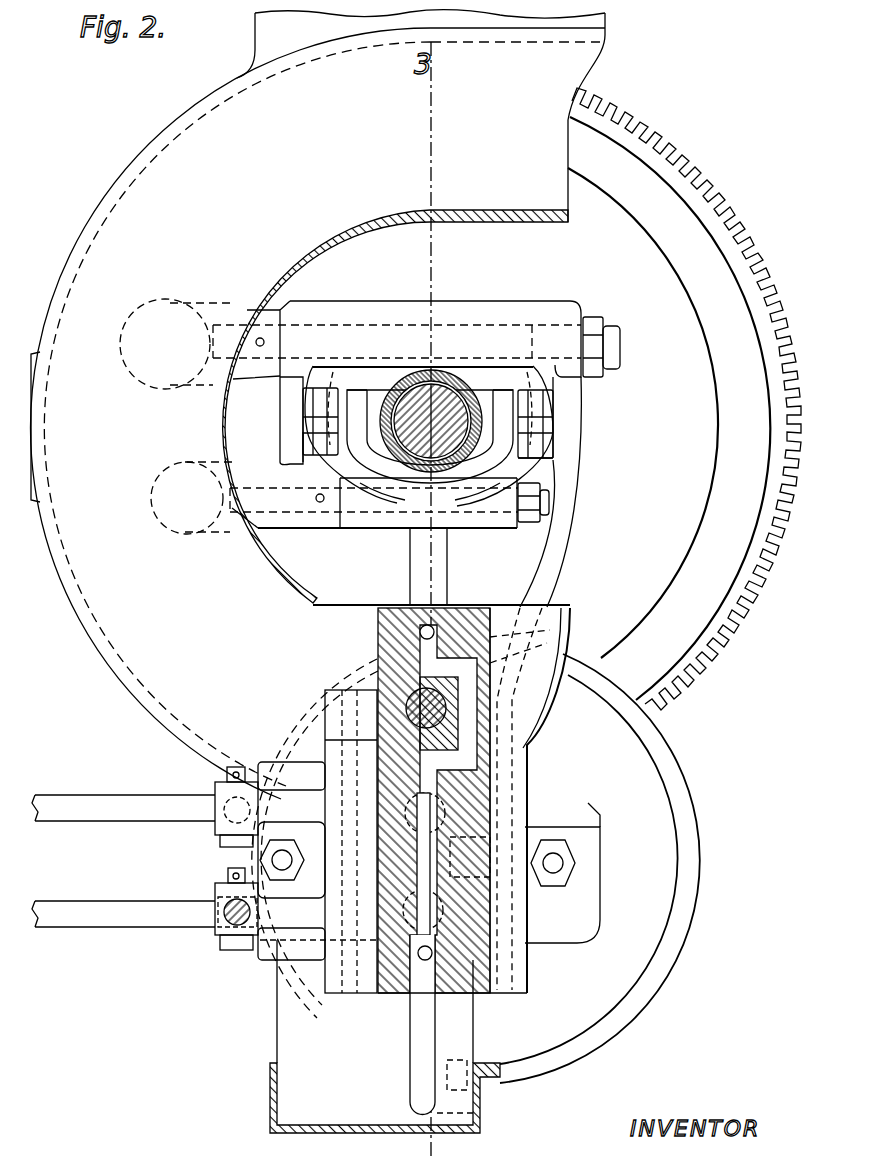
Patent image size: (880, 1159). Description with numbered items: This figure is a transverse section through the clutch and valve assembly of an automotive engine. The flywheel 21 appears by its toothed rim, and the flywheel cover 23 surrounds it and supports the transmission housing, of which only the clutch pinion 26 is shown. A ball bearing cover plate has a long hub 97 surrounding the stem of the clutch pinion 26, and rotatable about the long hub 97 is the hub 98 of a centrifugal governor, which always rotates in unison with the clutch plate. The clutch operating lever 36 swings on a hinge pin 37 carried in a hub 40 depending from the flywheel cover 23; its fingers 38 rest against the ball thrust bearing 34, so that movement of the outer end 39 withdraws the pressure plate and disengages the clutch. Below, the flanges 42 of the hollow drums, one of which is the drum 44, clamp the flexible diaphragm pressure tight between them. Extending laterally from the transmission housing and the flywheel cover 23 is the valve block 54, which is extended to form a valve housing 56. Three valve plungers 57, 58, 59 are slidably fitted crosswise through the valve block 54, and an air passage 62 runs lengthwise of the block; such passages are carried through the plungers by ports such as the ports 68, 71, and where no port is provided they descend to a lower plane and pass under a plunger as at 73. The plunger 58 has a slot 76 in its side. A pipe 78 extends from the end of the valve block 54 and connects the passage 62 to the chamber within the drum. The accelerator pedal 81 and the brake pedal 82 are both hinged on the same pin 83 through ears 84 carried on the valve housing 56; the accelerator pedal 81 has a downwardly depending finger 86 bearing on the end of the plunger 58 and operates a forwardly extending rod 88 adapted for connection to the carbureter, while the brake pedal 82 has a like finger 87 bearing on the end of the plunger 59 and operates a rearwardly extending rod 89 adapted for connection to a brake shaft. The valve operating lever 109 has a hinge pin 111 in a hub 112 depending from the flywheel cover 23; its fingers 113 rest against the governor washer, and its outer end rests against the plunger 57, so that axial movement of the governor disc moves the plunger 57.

The flywheel 21 is at (690, 612).
The flywheel cover 23 is at (178, 146).
The clutch pinion 26 is at (480, 372).
The ball thrust bearing 34 is at (482, 355).
The clutch operating lever 36 is at (570, 412).
The hinge pin 37 is at (560, 345).
The fingers 38 is at (303, 445).
The outer end 39 is at (490, 770).
The hub 40 is at (222, 300).
The flanges 42 is at (686, 800).
The hollow drum 44 is at (666, 840).
The valve block 54 is at (385, 636).
The valve housing 56 is at (517, 962).
The valve plunger 57 is at (378, 667).
The valve plunger 58 is at (428, 795).
The valve plunger 59 is at (418, 960).
The air passage 62 is at (380, 777).
The port 68 is at (447, 803).
The port 71 is at (478, 935).
The passage under plunger 73 is at (470, 727).
The slot 76 is at (500, 893).
The pipe 78 is at (425, 1033).
The accelerator pedal 81 is at (63, 808).
The brake pedal 82 is at (57, 912).
The pin 83 is at (357, 973).
The ears 84 is at (333, 707).
The finger 86 is at (400, 790).
The finger 87 is at (328, 1025).
The rod 88 is at (240, 810).
The rod 89 is at (235, 913).
The long hub 97 is at (431, 384).
The hub 98 is at (398, 385).
The valve operating lever 109 is at (435, 580).
The hinge pin 111 is at (448, 528).
The hub 112 is at (288, 528).
The fingers 113 is at (353, 393).